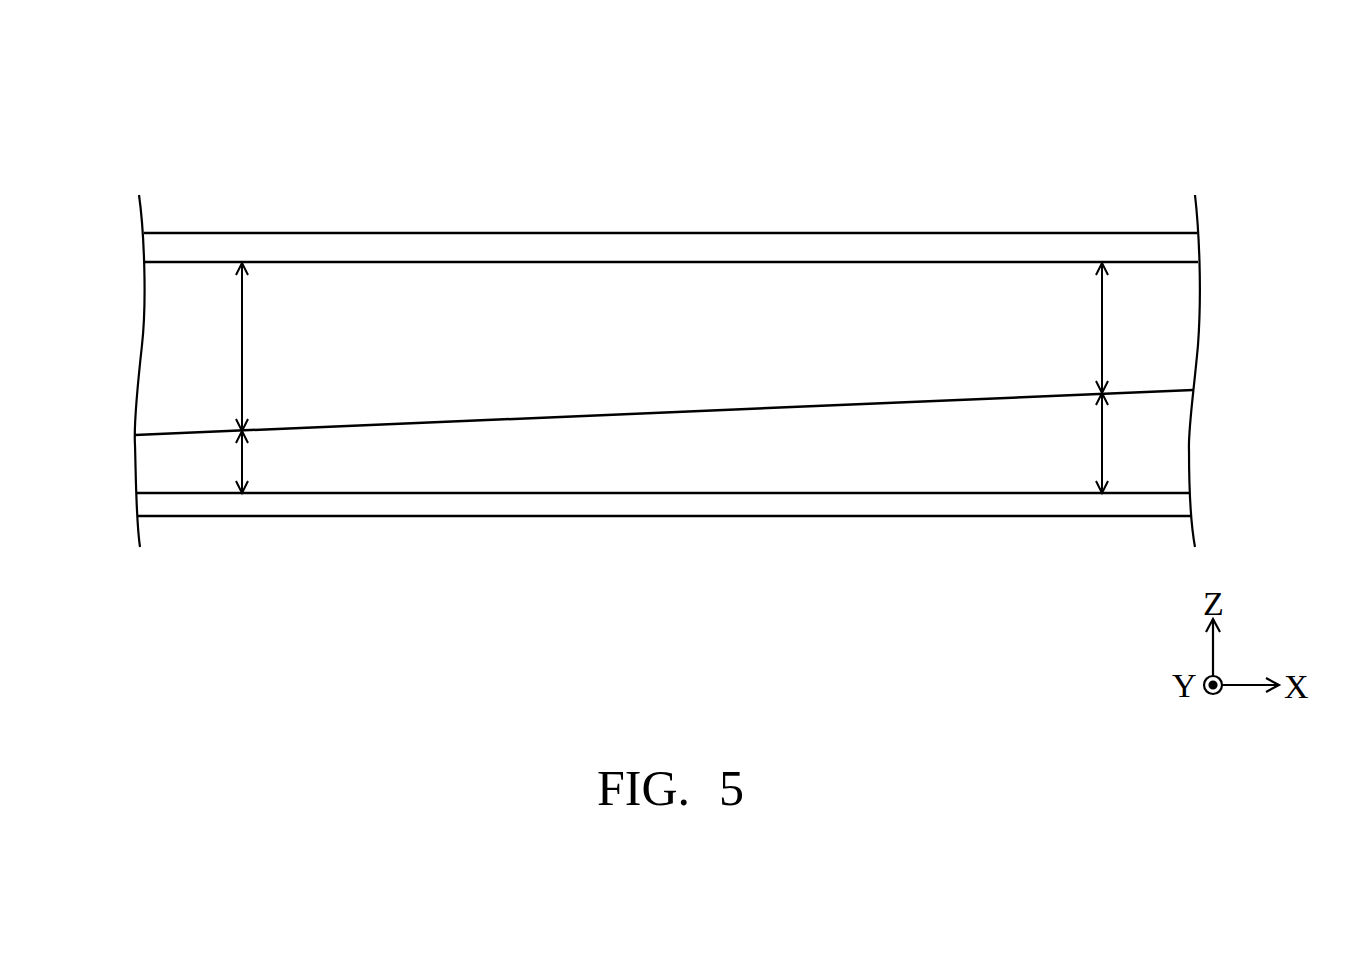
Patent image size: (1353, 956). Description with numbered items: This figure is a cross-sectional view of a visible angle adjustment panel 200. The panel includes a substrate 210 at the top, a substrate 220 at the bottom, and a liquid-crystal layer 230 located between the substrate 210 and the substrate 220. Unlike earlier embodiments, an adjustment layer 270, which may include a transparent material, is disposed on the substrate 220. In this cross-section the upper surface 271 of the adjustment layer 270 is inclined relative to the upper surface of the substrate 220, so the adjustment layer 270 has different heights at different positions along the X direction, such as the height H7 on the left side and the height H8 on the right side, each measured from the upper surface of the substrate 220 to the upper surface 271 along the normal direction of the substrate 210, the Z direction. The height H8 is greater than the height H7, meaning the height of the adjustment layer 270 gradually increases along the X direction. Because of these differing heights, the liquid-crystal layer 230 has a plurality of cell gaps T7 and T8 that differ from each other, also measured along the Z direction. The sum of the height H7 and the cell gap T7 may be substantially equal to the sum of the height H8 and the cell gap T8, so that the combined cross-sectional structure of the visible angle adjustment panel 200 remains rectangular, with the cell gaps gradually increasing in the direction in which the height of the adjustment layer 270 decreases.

The visible angle adjustment panel 200 is at (148, 93).
The substrate 210 is at (1177, 249).
The liquid-crystal layer 230 is at (1175, 328).
The upper surface of the adjustment layer 271 is at (663, 411).
The adjustment layer 270 is at (1168, 443).
The substrate 220 is at (1168, 505).
The cell gap T7 is at (260, 347).
The height H7 is at (262, 462).
The cell gap T8 is at (1120, 328).
The height H8 is at (1122, 443).